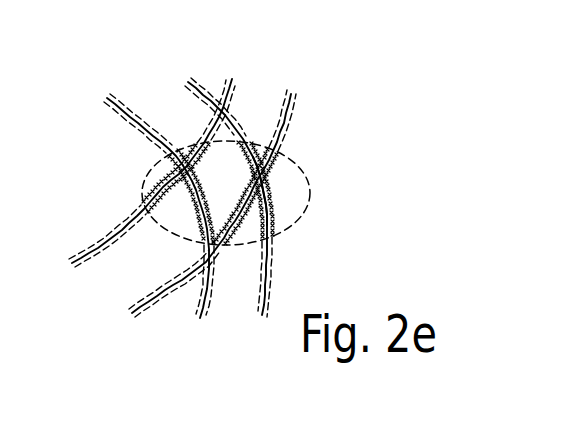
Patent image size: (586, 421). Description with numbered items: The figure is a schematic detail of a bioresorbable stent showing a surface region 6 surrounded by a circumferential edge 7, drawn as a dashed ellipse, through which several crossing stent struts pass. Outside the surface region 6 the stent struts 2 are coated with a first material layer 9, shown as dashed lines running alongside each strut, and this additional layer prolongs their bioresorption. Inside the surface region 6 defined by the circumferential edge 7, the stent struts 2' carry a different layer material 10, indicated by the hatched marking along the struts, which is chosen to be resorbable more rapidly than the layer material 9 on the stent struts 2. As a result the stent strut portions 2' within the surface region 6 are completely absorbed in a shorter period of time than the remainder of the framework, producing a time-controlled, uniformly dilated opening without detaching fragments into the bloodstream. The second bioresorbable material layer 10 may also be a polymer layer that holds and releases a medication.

The stent struts 2 is at (201, 175).
The stent struts inside the surface region 2' is at (306, 191).
The surface region 6 is at (188, 230).
The circumferential edge 7 is at (300, 167).
The first material layer 9 is at (287, 104).
The second bioresorbable material layer 10 is at (167, 183).